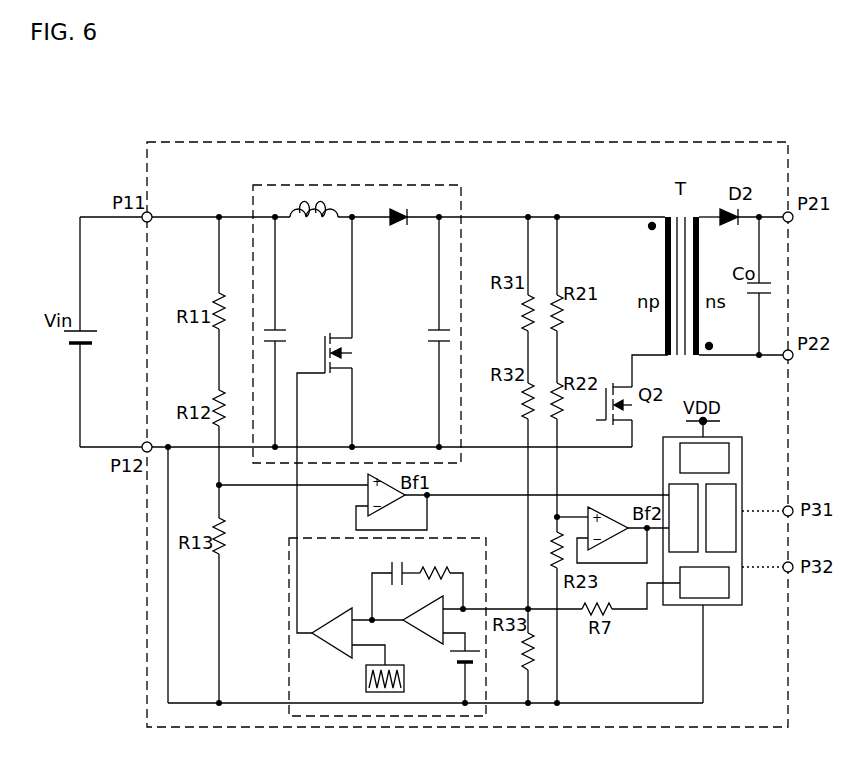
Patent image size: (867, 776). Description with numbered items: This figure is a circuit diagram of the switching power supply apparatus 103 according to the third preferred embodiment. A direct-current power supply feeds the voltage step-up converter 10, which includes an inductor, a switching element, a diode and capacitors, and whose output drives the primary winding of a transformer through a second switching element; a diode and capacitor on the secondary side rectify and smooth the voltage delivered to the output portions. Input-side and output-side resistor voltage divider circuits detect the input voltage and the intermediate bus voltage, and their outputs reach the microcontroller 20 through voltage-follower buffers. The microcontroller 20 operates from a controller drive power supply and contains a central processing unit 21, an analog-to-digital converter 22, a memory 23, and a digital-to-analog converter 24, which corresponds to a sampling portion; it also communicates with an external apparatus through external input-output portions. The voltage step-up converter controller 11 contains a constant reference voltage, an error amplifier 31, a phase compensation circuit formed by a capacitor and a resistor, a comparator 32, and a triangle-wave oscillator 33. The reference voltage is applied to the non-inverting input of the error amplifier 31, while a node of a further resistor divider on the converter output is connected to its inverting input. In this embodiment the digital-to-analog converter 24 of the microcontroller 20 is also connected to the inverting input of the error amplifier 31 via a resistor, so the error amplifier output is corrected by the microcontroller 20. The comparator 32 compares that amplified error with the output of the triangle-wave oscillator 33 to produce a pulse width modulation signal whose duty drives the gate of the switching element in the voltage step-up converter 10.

The switching power supply apparatus 103 is at (170, 141).
The voltage step-up converter 10 is at (462, 200).
The voltage step-up converter controller 11 is at (366, 625).
The microcontroller 20 is at (707, 519).
The central processing unit 21 is at (688, 443).
The analog-to-digital converter 22 is at (668, 487).
The memory 23 is at (736, 504).
The digital-to-analog converter 24 is at (720, 598).
The error amplifier 31 is at (416, 613).
The comparator 32 is at (328, 645).
The triangle-wave oscillator 33 is at (366, 686).